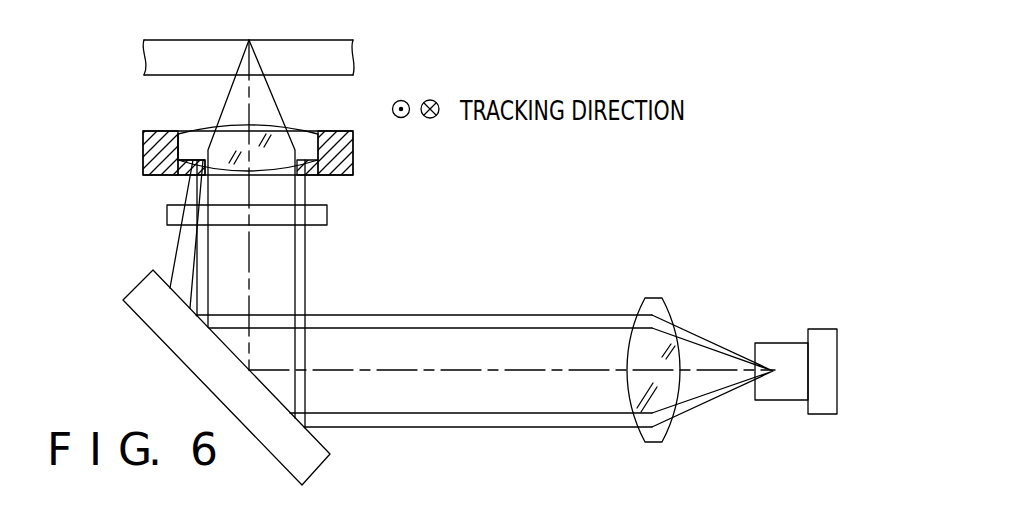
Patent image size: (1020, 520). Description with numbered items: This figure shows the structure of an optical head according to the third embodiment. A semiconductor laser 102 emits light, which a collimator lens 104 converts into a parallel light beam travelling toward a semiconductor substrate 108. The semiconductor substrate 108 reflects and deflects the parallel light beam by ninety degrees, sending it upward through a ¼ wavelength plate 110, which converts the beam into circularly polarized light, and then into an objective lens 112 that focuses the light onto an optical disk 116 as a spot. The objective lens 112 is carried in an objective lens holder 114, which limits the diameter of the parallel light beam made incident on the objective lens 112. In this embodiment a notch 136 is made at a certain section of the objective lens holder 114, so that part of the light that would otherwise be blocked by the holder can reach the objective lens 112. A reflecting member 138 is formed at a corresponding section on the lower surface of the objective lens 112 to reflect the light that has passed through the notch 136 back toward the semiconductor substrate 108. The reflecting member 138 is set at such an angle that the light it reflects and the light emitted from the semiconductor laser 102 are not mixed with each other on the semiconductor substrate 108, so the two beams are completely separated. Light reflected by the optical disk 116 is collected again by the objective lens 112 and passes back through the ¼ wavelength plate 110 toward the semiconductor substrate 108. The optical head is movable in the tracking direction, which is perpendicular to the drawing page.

The semiconductor laser 102 is at (785, 343).
The collimator lens 104 is at (653, 298).
The semiconductor substrate 108 is at (145, 306).
The ¼ wavelength plate 110 is at (327, 215).
The objective lens 112 is at (298, 145).
The objective lens holder 114 is at (353, 162).
The optical disk 116 is at (355, 58).
The notch 136 is at (190, 175).
The reflecting member 138 is at (202, 138).